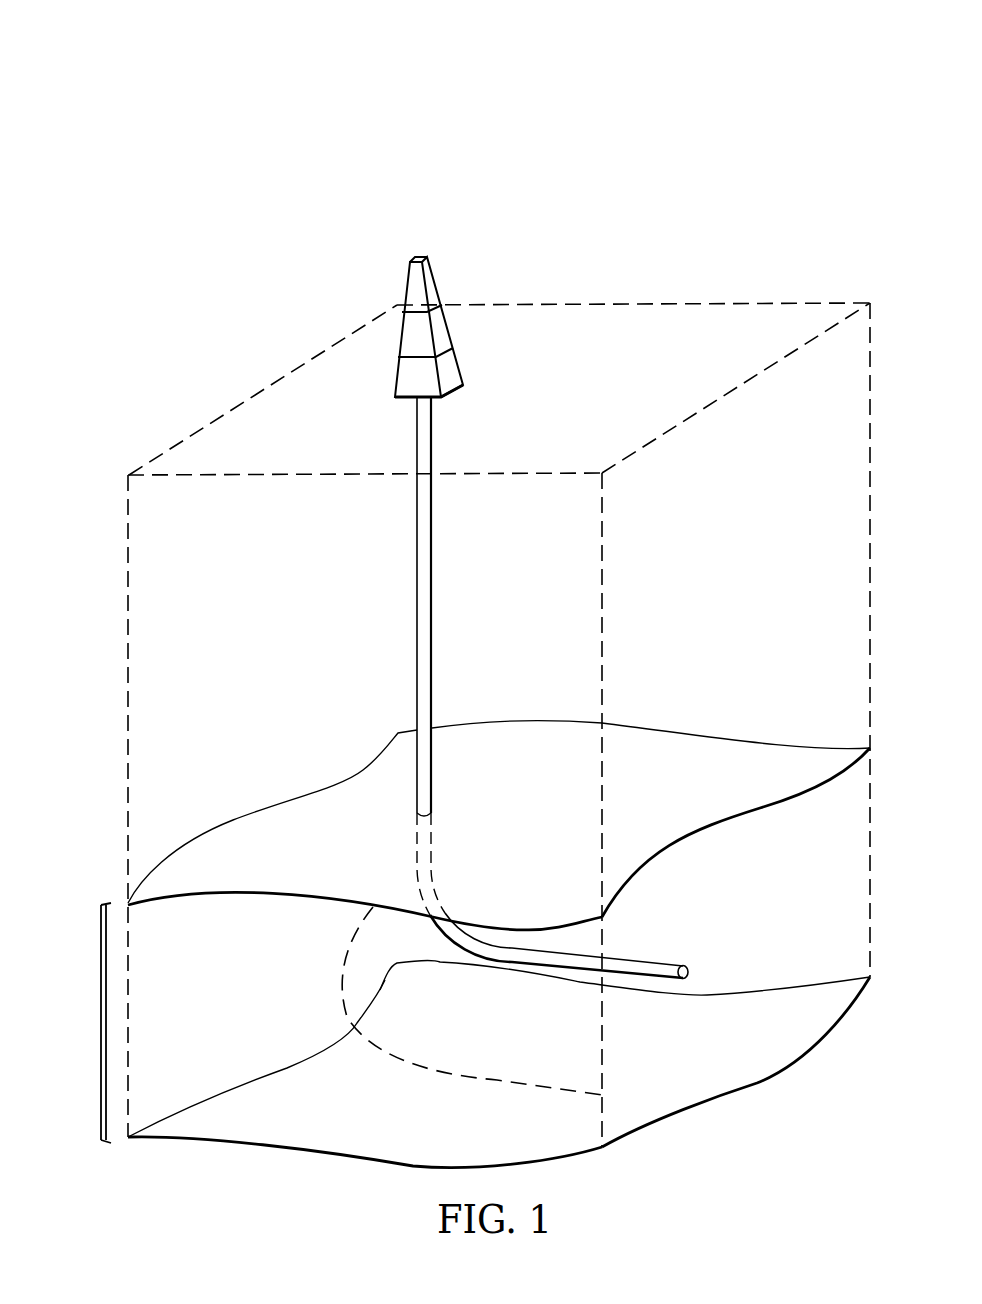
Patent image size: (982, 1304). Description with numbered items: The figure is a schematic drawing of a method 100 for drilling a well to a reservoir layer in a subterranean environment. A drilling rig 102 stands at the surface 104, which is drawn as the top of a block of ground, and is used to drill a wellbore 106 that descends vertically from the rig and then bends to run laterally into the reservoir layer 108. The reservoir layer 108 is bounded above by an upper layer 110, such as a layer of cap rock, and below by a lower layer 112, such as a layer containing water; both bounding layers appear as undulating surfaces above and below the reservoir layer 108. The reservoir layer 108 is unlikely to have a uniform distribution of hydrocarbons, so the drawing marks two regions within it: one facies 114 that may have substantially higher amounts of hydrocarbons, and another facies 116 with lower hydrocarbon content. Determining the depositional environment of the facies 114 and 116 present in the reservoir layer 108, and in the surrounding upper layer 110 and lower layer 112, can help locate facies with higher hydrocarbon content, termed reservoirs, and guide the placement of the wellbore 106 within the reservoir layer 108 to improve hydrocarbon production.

The method 100 is at (316, 65).
The drilling rig 102 is at (405, 282).
The surface 104 is at (295, 375).
The wellbore 106 is at (416, 565).
The reservoir layer 108 is at (101, 1013).
The upper layer 110 is at (712, 742).
The lower layer 112 is at (290, 1067).
The facies 114 is at (803, 905).
The facies 116 is at (235, 987).